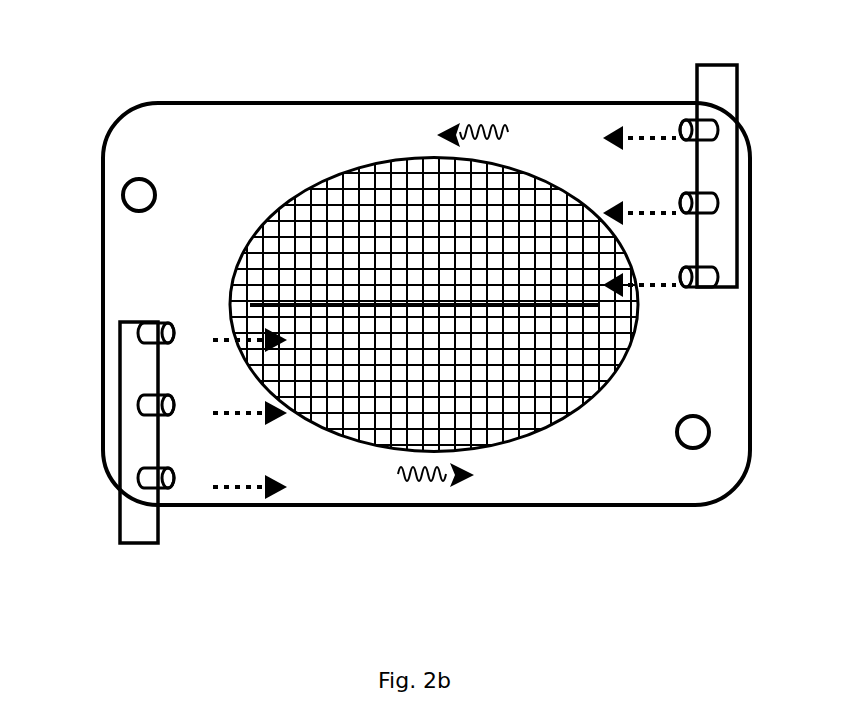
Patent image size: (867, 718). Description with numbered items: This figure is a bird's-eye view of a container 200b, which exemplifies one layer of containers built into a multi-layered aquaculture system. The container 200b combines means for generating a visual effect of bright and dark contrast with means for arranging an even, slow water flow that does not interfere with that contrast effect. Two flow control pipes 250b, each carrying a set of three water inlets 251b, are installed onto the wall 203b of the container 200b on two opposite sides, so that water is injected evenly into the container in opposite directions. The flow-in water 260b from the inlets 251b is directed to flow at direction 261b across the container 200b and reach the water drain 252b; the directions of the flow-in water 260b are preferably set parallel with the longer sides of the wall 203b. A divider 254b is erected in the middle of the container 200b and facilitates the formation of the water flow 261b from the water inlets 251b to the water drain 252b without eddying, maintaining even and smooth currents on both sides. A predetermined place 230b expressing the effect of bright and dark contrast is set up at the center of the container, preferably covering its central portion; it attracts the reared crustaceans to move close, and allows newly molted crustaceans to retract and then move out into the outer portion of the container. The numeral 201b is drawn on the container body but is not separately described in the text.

The container 200b is at (407, 304).
The frame plate 201b is at (128, 255).
The wall 203b is at (167, 102).
The water drain 252b is at (155, 178).
The predetermined place 230b is at (487, 390).
The divider 254b is at (545, 308).
The flow control pipe 250b is at (715, 63).
The water inlet 251b is at (716, 130).
The flow-in water 260b is at (612, 205).
The direction of water flow 261b is at (443, 128).